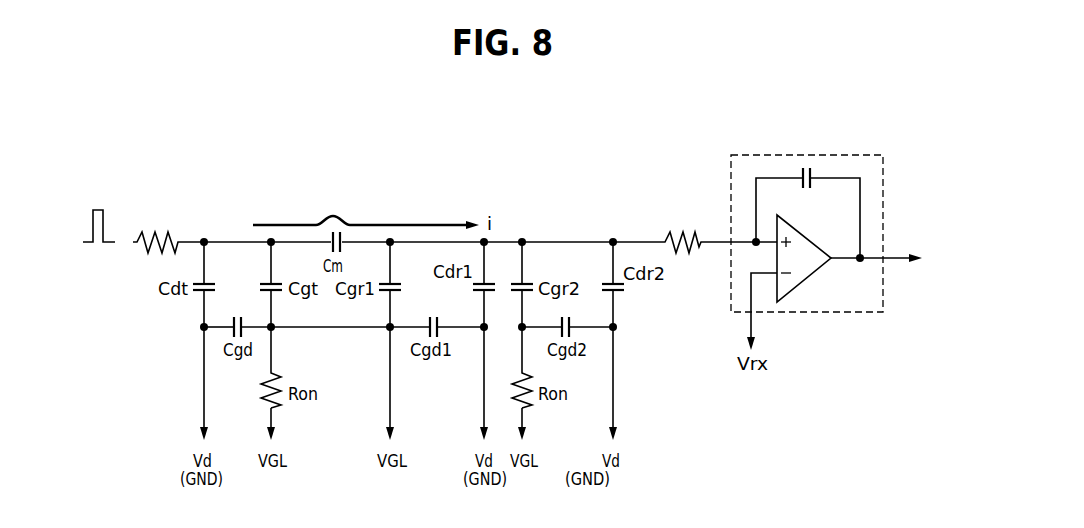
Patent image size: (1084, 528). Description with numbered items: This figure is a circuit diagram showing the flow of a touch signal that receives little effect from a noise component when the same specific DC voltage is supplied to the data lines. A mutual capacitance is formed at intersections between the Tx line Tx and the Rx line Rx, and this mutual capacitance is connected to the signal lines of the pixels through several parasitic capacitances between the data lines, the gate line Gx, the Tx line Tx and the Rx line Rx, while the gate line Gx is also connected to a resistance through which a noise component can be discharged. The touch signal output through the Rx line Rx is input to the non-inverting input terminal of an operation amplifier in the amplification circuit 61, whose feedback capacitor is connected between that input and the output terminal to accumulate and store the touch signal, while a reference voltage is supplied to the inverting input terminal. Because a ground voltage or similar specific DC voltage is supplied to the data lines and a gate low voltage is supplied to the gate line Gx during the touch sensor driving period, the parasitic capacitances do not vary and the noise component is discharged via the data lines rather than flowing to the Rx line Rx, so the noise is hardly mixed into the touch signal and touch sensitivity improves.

The amplification circuit 61 is at (807, 155).
The Tx line Tx is at (224, 240).
The Rx line Rx is at (642, 240).
The gate line Gx is at (330, 330).